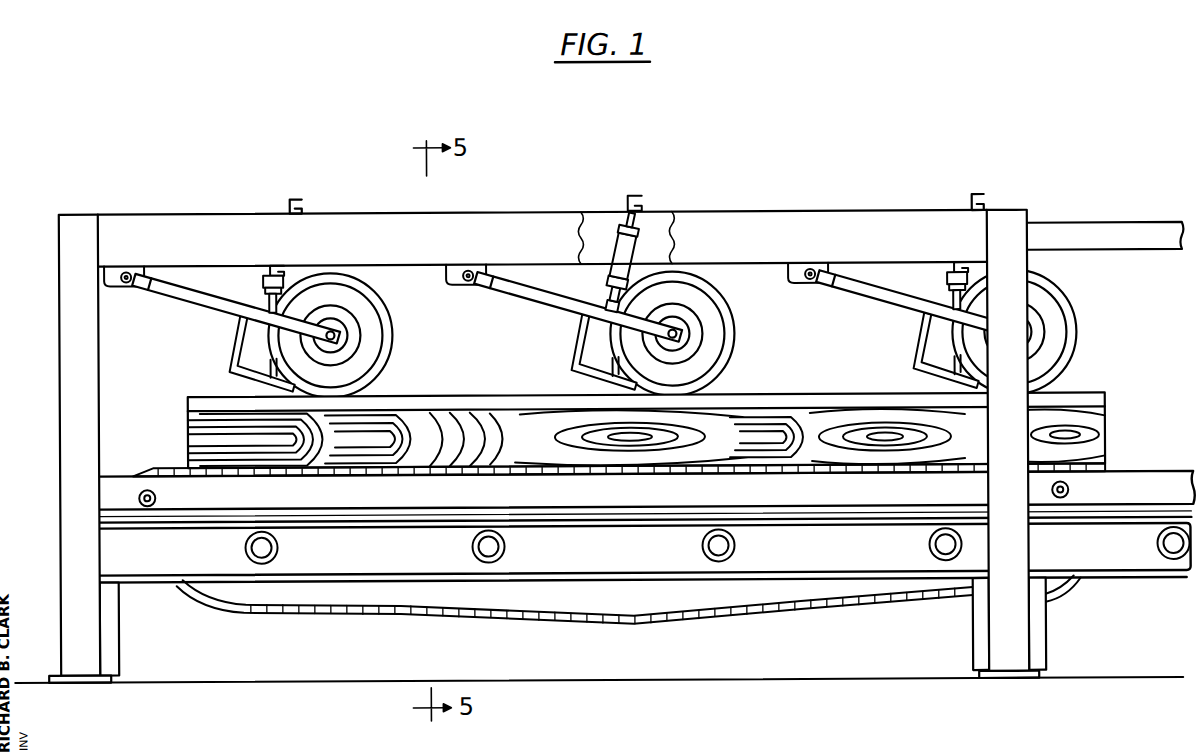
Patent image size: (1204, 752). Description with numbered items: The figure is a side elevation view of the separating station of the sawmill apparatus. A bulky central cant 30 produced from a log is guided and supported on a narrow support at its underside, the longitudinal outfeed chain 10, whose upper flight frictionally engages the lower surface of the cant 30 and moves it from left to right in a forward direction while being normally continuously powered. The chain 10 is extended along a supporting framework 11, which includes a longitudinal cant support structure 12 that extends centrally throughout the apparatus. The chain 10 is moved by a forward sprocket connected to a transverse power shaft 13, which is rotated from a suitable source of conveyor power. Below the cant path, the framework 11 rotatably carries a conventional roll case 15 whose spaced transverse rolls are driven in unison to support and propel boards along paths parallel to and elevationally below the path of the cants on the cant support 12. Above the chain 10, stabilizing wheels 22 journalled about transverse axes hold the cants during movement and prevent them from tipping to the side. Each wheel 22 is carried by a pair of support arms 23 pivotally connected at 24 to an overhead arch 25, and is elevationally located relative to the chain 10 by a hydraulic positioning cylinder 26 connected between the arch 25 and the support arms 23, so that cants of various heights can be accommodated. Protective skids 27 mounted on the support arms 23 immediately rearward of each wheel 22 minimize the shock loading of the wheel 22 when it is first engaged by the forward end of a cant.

The longitudinal outfeed chain 10 is at (465, 470).
The supporting framework 11 is at (157, 581).
The longitudinal cant support structure 12 is at (688, 499).
The transverse power shaft 13 is at (1068, 490).
The roll case 15 is at (600, 565).
The wheel 22 is at (394, 336).
The support arm 23 is at (217, 300).
The pivotal connection 24 is at (131, 268).
The overhead arch 25 is at (741, 212).
The hydraulic positioning cylinder 26 is at (269, 272).
The protective skid 27 is at (234, 362).
The cant 30 is at (188, 432).